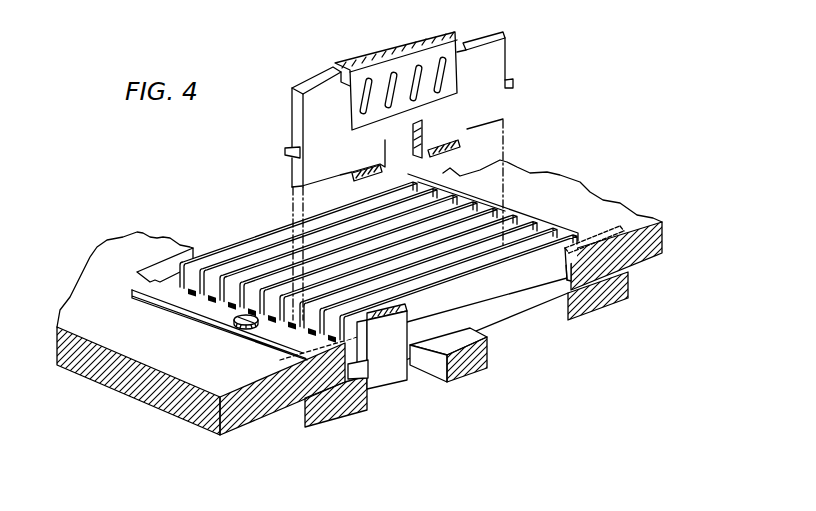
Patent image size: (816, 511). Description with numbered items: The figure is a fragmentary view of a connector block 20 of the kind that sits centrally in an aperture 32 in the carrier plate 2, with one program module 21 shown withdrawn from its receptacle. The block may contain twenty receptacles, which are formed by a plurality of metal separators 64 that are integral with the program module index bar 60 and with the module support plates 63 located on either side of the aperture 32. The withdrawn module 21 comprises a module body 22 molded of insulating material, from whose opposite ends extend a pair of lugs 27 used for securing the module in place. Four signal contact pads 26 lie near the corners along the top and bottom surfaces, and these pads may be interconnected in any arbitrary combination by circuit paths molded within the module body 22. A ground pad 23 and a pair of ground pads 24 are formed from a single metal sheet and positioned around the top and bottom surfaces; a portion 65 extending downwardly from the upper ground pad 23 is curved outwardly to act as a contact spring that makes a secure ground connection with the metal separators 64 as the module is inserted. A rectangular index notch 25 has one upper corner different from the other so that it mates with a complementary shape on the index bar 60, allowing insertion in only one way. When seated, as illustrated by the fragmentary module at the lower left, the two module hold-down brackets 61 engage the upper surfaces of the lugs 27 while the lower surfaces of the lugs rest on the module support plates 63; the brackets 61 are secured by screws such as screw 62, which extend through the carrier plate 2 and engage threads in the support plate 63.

The carrier plate 2 is at (240, 425).
The connector block 20 is at (523, 210).
The program module 21 is at (398, 351).
The module body 22 is at (488, 70).
The ground pad 23 is at (398, 43).
The ground pads 24 is at (365, 179).
The index notch 25 is at (403, 140).
The signal contact pads 26 is at (312, 78).
The lugs 27 is at (285, 153).
The aperture 32 is at (172, 263).
The program module index bar 60 is at (453, 372).
The module hold-down brackets 61 is at (283, 340).
The screw 62 is at (232, 320).
The module support plates 63 is at (330, 417).
The metal separators 64 is at (257, 252).
The contact spring portion 65 is at (457, 62).